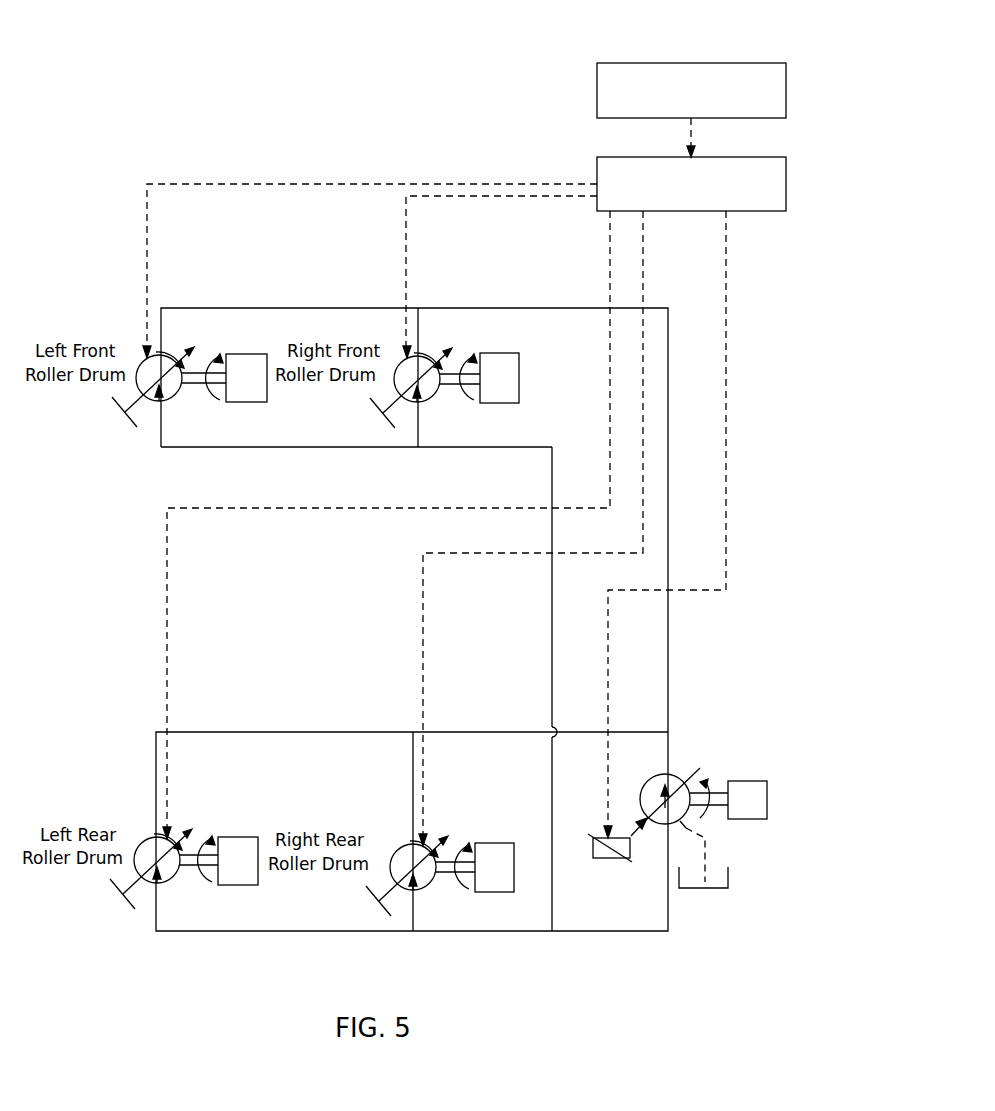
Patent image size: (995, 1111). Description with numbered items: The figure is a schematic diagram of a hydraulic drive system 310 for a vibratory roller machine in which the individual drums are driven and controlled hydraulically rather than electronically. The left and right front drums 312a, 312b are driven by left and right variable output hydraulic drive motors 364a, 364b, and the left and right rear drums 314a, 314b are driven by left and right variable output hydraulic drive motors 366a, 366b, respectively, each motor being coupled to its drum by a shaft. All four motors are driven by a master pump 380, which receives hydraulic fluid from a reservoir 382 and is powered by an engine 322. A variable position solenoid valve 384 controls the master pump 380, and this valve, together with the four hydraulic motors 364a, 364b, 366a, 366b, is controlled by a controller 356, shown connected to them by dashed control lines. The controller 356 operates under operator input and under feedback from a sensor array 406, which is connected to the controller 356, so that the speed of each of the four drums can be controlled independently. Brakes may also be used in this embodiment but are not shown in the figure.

The hydraulic drive system 310 is at (116, 52).
The sensor array 406 is at (597, 76).
The controller 356 is at (597, 170).
The left front drum 312a is at (248, 353).
The right front drum 312b is at (519, 393).
The left rear drum 314a is at (248, 886).
The right rear drum 314b is at (490, 893).
The left front variable output hydraulic drive motor 364a is at (170, 402).
The right front variable output hydraulic drive motor 364b is at (430, 403).
The left rear variable output hydraulic drive motor 366a is at (137, 845).
The right rear variable output hydraulic drive motor 366b is at (390, 848).
The master pump 380 is at (648, 785).
The engine 322 is at (767, 797).
The reservoir 382 is at (730, 872).
The variable position solenoid valve 384 is at (603, 862).